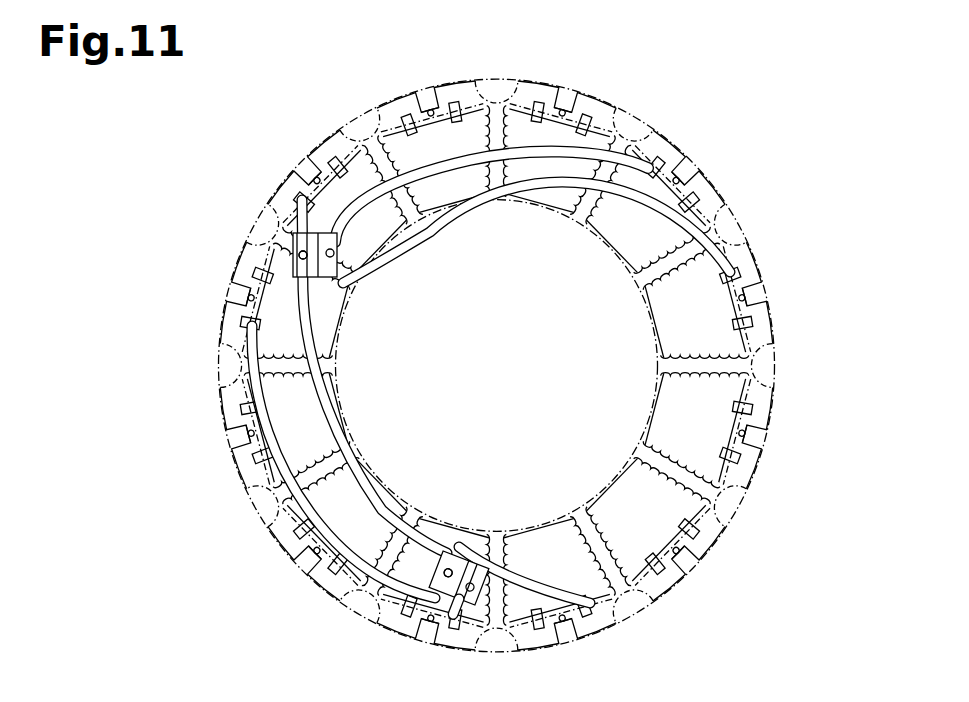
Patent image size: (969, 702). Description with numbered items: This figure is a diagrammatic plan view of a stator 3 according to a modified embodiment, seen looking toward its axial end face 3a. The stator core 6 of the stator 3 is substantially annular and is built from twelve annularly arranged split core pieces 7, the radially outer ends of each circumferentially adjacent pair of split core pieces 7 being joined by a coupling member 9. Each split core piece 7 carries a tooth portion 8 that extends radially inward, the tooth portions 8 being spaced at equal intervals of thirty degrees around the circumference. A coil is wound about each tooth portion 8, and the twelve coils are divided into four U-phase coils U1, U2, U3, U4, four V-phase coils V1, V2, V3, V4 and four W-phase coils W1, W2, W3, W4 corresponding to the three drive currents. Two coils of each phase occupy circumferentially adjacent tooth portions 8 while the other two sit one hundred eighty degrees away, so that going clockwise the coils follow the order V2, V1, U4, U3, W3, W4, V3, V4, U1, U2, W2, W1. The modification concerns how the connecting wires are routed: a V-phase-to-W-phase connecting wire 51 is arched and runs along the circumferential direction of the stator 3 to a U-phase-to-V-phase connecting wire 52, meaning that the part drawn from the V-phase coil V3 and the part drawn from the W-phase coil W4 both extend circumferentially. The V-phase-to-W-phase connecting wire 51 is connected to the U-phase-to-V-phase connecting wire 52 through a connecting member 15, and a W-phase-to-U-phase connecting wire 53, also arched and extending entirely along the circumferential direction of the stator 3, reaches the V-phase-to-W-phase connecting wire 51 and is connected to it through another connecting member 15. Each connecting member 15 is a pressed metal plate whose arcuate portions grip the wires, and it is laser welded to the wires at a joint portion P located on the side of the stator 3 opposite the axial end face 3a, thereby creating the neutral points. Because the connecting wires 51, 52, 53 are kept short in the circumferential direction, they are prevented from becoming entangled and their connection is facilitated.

The stator 3 is at (713, 110).
The axial end face 3a is at (662, 147).
The stator core 6 is at (608, 90).
The split core piece 7 is at (447, 79).
The tooth portion 8 is at (653, 347).
The coupling member 9 is at (498, 78).
The connecting member 15 is at (291, 268).
The V-phase-to-W-phase connecting wire 51 is at (300, 515).
The U-phase-to-V-phase connecting wire 52 is at (556, 582).
The W-phase-to-U-phase connecting wire 53 is at (340, 195).
The joint portion P is at (417, 413).
The U-phase coil U1 is at (557, 187).
The U-phase coil U2 is at (637, 243).
The U-phase coil U3 is at (355, 487).
The U-phase coil U4 is at (433, 516).
The V-phase coil V1 is at (528, 545).
The V-phase coil V2 is at (613, 510).
The V-phase coil V3 is at (372, 212).
The V-phase coil V4 is at (460, 177).
The W-phase coil W1 is at (670, 435).
The W-phase coil W2 is at (657, 335).
The W-phase coil W3 is at (310, 420).
The W-phase coil W4 is at (327, 303).